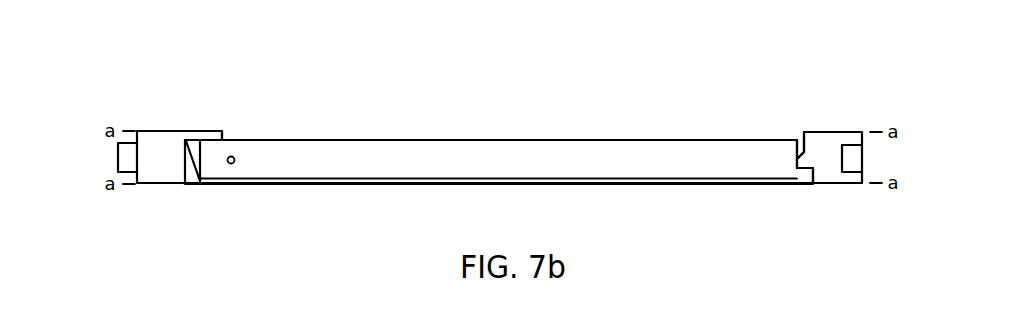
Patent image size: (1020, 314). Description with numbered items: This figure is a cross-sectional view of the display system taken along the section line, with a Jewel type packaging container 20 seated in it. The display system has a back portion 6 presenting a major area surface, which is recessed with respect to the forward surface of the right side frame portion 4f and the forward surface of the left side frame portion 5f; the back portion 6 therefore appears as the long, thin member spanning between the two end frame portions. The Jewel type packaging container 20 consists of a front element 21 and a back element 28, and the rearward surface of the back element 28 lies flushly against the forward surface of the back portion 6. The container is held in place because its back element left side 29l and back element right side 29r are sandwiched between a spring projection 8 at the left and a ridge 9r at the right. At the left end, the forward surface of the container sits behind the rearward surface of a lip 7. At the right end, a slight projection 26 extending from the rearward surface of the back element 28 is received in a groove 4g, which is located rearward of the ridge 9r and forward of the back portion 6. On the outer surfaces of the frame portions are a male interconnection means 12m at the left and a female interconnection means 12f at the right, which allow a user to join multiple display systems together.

The forward surface of left side frame portion 5f is at (163, 127).
The lip 7 is at (208, 130).
The male interconnection means 12m is at (116, 158).
The spring projection 8 is at (188, 178).
The back element left side 29l is at (210, 158).
The front element 21 is at (328, 137).
The Jewel type packaging container 20 is at (527, 137).
The back element 28 is at (432, 175).
The back portion 6 is at (263, 185).
The ridge 9r is at (792, 162).
The back element right side 29r is at (788, 150).
The slight projection 26 is at (793, 179).
The forward surface of right side frame portion 4f is at (816, 125).
The groove 4g is at (812, 152).
The female interconnection means 12f is at (865, 158).